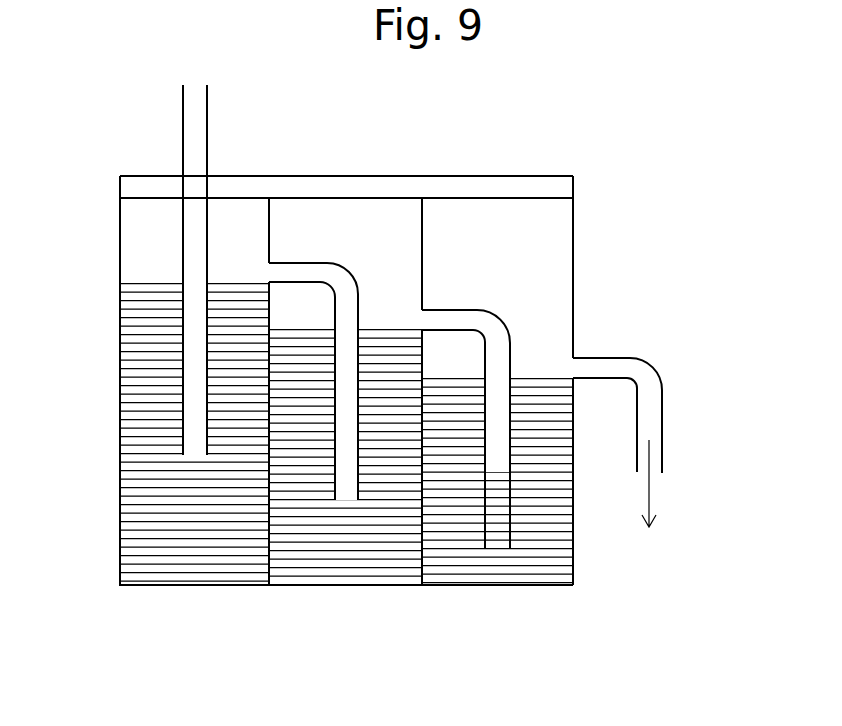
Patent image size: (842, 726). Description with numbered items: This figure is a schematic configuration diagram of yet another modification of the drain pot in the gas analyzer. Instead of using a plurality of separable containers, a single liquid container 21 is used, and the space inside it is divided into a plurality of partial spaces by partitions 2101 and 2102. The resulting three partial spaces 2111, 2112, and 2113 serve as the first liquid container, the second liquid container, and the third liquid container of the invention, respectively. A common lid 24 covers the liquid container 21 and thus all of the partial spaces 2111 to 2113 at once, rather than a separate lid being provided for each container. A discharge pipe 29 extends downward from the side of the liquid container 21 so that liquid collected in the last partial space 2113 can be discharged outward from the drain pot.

The liquid container 21 is at (575, 263).
The lid 24 is at (548, 193).
The discharge pipe 29 is at (655, 407).
The partition 2101 is at (270, 243).
The partition 2102 is at (423, 252).
The subspace 2111 is at (172, 547).
The subspace 2112 is at (345, 547).
The subspace 2113 is at (530, 548).